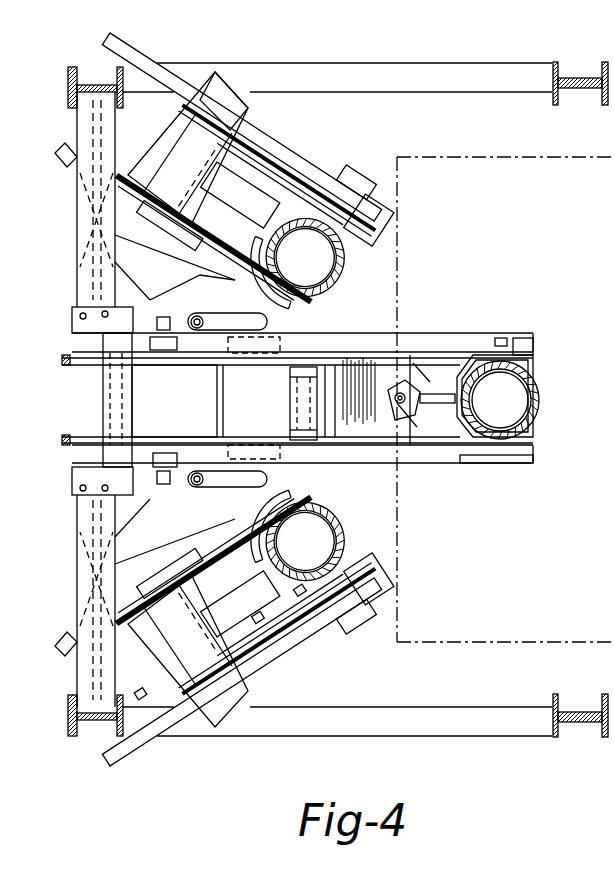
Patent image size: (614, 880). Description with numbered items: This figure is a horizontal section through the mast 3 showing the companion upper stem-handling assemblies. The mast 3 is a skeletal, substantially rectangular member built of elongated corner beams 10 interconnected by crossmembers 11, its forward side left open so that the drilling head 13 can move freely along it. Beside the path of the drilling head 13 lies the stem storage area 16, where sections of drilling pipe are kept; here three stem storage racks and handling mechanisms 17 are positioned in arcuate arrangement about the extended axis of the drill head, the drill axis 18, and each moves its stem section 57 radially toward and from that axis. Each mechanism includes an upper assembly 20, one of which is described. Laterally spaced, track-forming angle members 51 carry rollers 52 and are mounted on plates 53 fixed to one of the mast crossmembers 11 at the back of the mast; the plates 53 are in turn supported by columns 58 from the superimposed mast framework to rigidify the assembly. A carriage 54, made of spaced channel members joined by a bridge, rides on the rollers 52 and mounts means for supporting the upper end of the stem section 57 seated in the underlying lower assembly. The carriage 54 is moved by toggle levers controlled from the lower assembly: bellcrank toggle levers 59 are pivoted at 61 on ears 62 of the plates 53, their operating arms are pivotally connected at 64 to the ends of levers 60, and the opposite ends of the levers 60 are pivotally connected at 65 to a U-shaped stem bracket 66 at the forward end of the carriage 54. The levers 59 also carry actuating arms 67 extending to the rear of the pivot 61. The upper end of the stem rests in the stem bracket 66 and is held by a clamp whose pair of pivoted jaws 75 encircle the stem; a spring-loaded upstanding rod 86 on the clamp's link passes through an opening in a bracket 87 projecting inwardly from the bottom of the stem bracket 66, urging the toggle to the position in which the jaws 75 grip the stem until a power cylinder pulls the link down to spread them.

The mast 3 is at (52, 236).
The corner beams 10 is at (66, 93).
The crossmembers 11 is at (340, 63).
The drilling head 13 is at (473, 153).
The stem storage area 16 is at (359, 136).
The stem storage racks and handling mechanisms 17 is at (297, 117).
The drill axis 18 is at (520, 407).
The upper assembly 20 is at (373, 266).
The angle members 51 is at (207, 277).
The rollers 52 is at (153, 462).
The plates 53 is at (200, 273).
The carriage 54 is at (375, 246).
The stem section 57 is at (342, 272).
The columns 58 is at (200, 308).
The toggle levers 59 is at (148, 187).
The levers 60 is at (297, 163).
The pivot 61 is at (250, 92).
The ears 62 is at (72, 330).
The pivotal connection 64 is at (274, 148).
The pivotal connection 65 is at (362, 200).
The U-shaped stem bracket 66 is at (250, 240).
The actuating arms 67 is at (183, 118).
The jaws 75 is at (535, 370).
The rod 86 is at (395, 407).
The bracket 87 is at (428, 380).